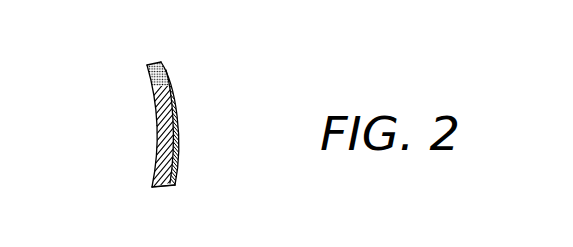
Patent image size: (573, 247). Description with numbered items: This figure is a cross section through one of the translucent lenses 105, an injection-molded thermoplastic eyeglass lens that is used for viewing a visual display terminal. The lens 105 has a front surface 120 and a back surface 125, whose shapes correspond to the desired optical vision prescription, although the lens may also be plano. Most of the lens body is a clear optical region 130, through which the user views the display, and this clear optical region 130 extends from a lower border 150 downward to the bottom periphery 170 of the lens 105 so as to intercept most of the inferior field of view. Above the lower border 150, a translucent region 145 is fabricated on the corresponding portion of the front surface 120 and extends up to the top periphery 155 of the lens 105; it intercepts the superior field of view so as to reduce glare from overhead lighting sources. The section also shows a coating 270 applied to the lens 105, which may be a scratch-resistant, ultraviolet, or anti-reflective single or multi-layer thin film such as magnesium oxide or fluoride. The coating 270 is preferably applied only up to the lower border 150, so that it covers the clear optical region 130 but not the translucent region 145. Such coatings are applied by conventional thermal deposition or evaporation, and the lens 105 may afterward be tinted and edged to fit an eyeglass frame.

The lens 105 is at (315, 206).
The front surface 120 is at (178, 134).
The back surface 125 is at (157, 118).
The clear optical region 130 is at (158, 158).
The translucent region 145 is at (171, 84).
The lower border 150 is at (189, 89).
The top periphery 155 is at (167, 77).
The bottom periphery 170 is at (153, 188).
The coating 270 is at (184, 165).